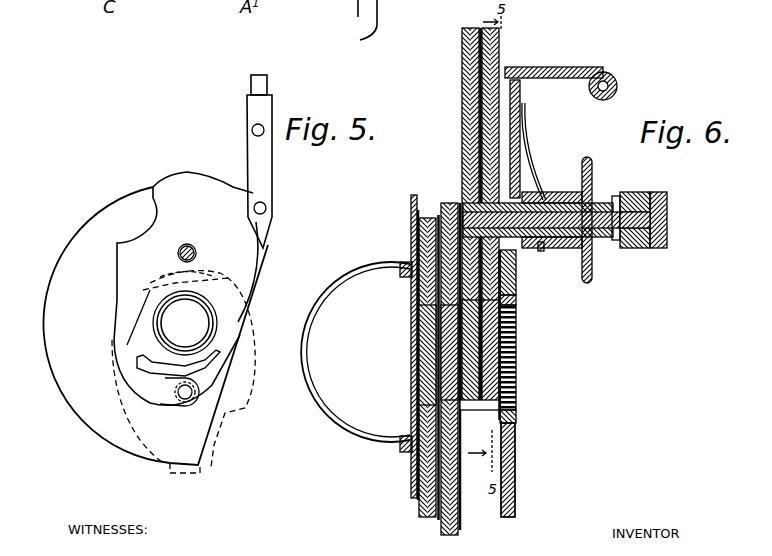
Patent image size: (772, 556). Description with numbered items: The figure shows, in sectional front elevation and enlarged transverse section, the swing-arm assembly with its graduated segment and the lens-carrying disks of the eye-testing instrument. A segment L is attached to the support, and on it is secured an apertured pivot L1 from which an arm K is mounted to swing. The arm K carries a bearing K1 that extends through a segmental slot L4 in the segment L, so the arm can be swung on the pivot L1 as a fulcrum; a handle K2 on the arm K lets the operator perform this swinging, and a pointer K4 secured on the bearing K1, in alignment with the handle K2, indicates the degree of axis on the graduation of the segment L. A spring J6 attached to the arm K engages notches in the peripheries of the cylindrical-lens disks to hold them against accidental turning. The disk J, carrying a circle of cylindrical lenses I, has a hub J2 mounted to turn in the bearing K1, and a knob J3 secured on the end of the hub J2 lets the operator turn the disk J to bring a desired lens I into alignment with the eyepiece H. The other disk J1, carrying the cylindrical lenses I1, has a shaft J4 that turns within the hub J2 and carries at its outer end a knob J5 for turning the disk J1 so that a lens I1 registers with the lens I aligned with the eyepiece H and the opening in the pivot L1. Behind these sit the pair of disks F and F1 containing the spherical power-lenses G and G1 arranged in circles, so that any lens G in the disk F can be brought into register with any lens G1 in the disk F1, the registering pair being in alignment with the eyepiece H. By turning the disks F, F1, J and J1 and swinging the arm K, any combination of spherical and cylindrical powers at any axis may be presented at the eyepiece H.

In FIG. 5, the segment L is at (66, 372).
In FIG. 6, the segment L is at (516, 483).
In FIG. 5, the apertured pivot L1 is at (218, 326).
In FIG. 6, the apertured pivot L1 is at (516, 408).
In FIG. 5, the segmental slot L4 is at (118, 305).
In FIG. 5, the spring J6 is at (214, 371).
In FIG. 5, the hub J2 is at (198, 258).
In FIG. 6, the hub J2 is at (560, 192).
In FIG. 5, the bearing K1 is at (192, 247).
In FIG. 6, the bearing K1 is at (540, 250).
In FIG. 5, the shaft J4 is at (178, 257).
In FIG. 6, the shaft J4 is at (602, 232).
In FIG. 5, the handle K2 is at (187, 178).
In FIG. 6, the handle K2 is at (575, 67).
In FIG. 5, the arm K is at (257, 262).
In FIG. 6, the arm K is at (522, 97).
In FIG. 6, the eyepiece H is at (345, 290).
In FIG. 6, the disk F1 is at (420, 516).
In FIG. 6, the disk F is at (450, 525).
In FIG. 6, the disk J1 is at (468, 112).
In FIG. 6, the spherical power-lens G is at (420, 325).
In FIG. 6, the spherical power-lens G1 is at (420, 368).
In FIG. 6, the cylindrical lens I is at (516, 353).
In FIG. 6, the cylindrical lens I1 is at (516, 385).
In FIG. 6, the pointer K4 is at (530, 128).
In FIG. 6, the disk J is at (482, 408).
In FIG. 6, the knob J3 is at (597, 160).
In FIG. 6, the knob J5 is at (672, 240).